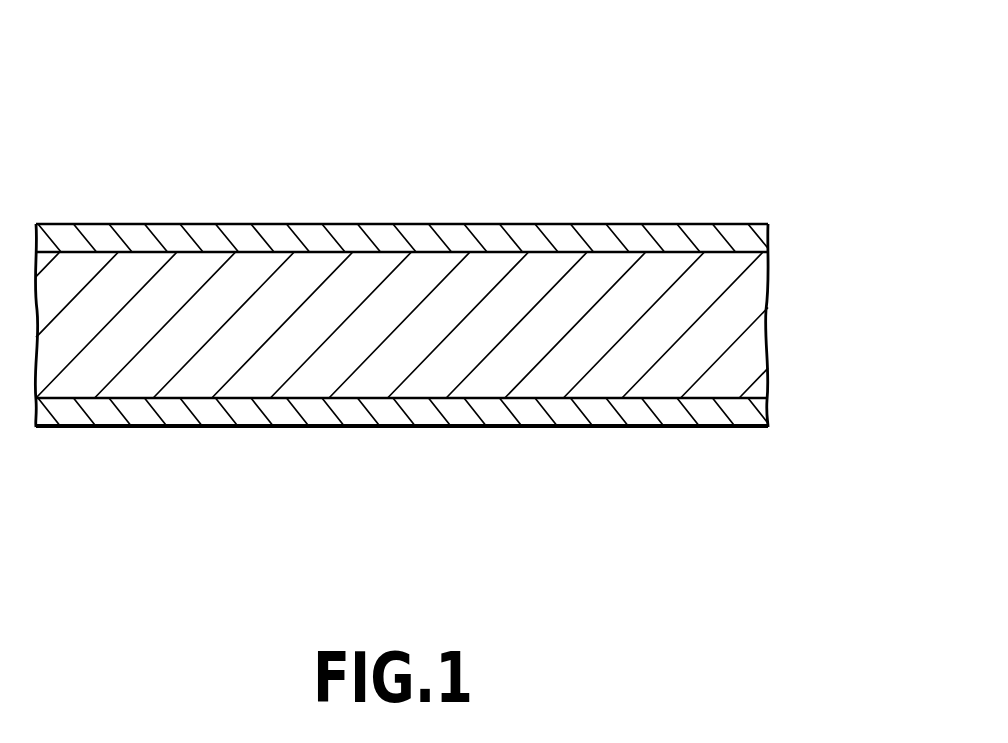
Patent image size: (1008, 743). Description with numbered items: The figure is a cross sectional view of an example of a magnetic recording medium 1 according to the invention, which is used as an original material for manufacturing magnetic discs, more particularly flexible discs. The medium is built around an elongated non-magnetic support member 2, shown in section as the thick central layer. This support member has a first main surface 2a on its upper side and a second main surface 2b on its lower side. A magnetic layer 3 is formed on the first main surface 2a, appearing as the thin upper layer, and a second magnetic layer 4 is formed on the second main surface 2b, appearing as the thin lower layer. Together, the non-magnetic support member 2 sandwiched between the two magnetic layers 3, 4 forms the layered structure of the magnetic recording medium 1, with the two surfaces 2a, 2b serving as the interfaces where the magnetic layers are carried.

The magnetic recording medium 1 is at (709, 148).
The non-magnetic support member 2 is at (728, 317).
The first main surface 2a is at (737, 241).
The second main surface 2b is at (738, 402).
The magnetic layer 3 is at (746, 233).
The magnetic layer 4 is at (745, 413).